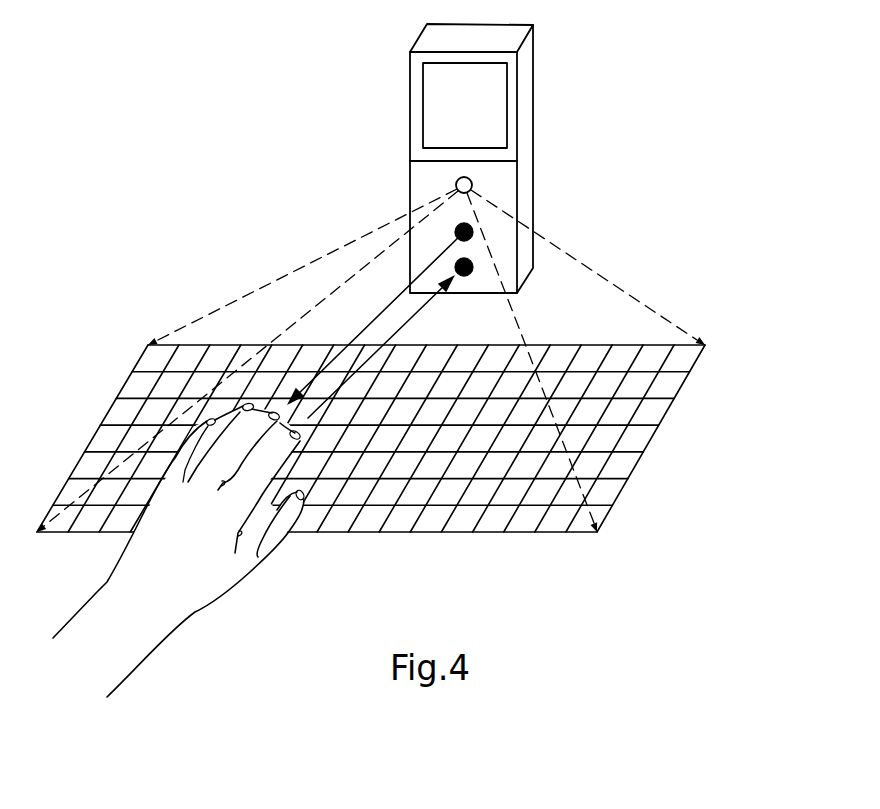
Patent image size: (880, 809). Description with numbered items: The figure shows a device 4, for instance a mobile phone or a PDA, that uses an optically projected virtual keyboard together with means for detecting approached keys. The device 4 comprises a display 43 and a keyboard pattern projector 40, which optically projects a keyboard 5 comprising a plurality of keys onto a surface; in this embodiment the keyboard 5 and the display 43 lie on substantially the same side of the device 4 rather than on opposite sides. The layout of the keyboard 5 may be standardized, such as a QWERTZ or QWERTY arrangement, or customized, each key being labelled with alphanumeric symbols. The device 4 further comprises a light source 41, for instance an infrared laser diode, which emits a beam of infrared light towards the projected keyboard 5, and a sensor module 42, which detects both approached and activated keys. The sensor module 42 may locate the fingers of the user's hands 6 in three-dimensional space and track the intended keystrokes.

The device 4 is at (570, 66).
The display 43 is at (423, 106).
The keyboard pattern projector 40 is at (456, 188).
The light source 41 is at (473, 230).
The sensor module 42 is at (473, 268).
The optically projected virtual keyboard 5 is at (653, 438).
The user's hands 6 is at (178, 628).